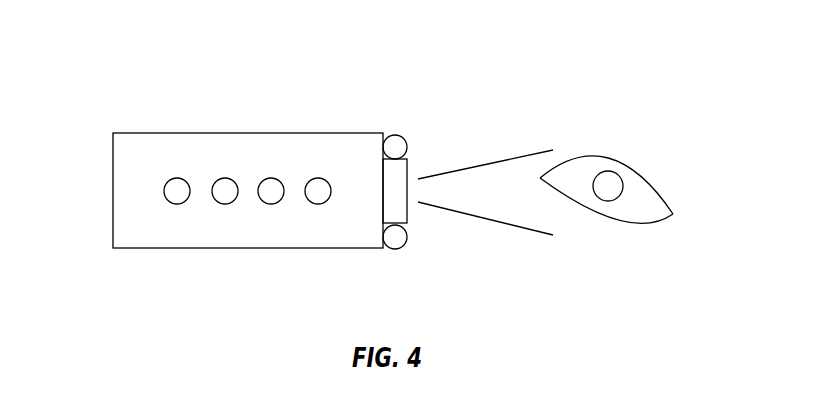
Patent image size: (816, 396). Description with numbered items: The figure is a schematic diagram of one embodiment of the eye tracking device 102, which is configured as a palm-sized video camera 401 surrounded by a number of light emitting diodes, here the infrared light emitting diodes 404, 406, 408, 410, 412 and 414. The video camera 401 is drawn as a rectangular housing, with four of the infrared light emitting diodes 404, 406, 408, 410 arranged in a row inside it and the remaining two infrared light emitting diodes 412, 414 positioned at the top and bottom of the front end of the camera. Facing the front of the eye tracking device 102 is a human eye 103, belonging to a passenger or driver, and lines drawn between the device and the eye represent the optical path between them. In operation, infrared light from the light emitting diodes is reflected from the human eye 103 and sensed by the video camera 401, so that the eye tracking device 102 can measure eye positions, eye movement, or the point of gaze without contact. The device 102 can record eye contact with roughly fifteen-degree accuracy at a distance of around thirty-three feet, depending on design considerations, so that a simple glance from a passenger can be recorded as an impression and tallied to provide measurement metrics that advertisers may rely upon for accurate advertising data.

The eye tracking device 102 is at (127, 61).
The human eye 103 is at (656, 164).
The video camera 401 is at (177, 133).
The infrared light emitting diode 404 is at (177, 191).
The infrared light emitting diode 406 is at (225, 191).
The infrared light emitting diode 408 is at (271, 191).
The infrared light emitting diode 410 is at (318, 191).
The infrared light emitting diode 412 is at (395, 147).
The infrared light emitting diode 414 is at (395, 237).